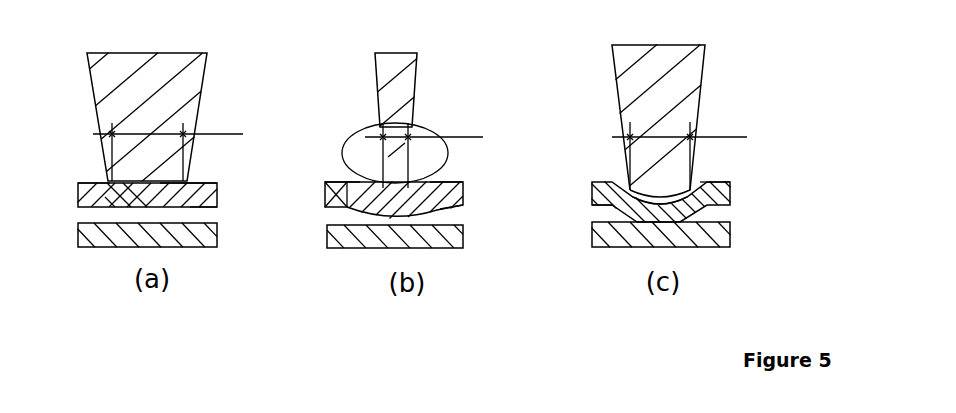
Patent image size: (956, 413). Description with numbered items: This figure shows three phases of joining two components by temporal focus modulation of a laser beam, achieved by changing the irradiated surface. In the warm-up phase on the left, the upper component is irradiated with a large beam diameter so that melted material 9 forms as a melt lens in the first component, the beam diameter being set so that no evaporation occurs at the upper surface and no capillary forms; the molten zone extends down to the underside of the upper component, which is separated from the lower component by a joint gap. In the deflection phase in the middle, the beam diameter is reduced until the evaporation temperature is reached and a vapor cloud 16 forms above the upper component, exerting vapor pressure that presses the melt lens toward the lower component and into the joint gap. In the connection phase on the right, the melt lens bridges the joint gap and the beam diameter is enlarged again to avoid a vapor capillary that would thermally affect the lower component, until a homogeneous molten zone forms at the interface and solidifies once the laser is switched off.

The melted material 9 is at (185, 190).
The vapor cloud 16 is at (363, 160).